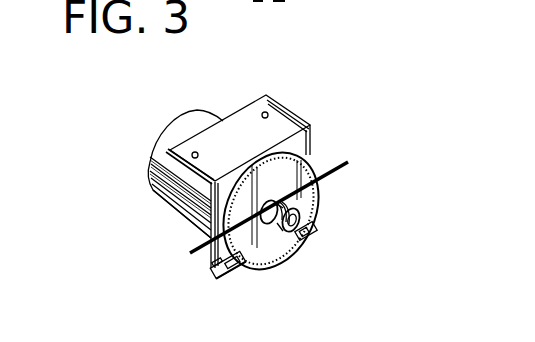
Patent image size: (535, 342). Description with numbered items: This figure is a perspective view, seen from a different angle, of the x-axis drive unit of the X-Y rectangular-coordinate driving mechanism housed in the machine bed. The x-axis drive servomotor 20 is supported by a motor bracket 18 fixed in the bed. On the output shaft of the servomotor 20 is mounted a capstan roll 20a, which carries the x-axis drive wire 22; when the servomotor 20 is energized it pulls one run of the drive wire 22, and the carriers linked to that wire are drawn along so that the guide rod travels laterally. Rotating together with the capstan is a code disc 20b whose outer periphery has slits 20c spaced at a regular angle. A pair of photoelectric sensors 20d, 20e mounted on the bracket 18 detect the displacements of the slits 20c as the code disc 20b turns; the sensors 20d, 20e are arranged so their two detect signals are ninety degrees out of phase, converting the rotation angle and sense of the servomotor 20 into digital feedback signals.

The motor bracket 18 is at (243, 115).
The x-axis drive servomotor 20 is at (187, 113).
The capstan roll 20a is at (312, 218).
The code disc 20b is at (275, 245).
The slits 20c is at (273, 262).
The photoelectric sensor 20d is at (237, 278).
The photoelectric sensor 20e is at (312, 231).
The x-axis drive wire 22 is at (350, 173).